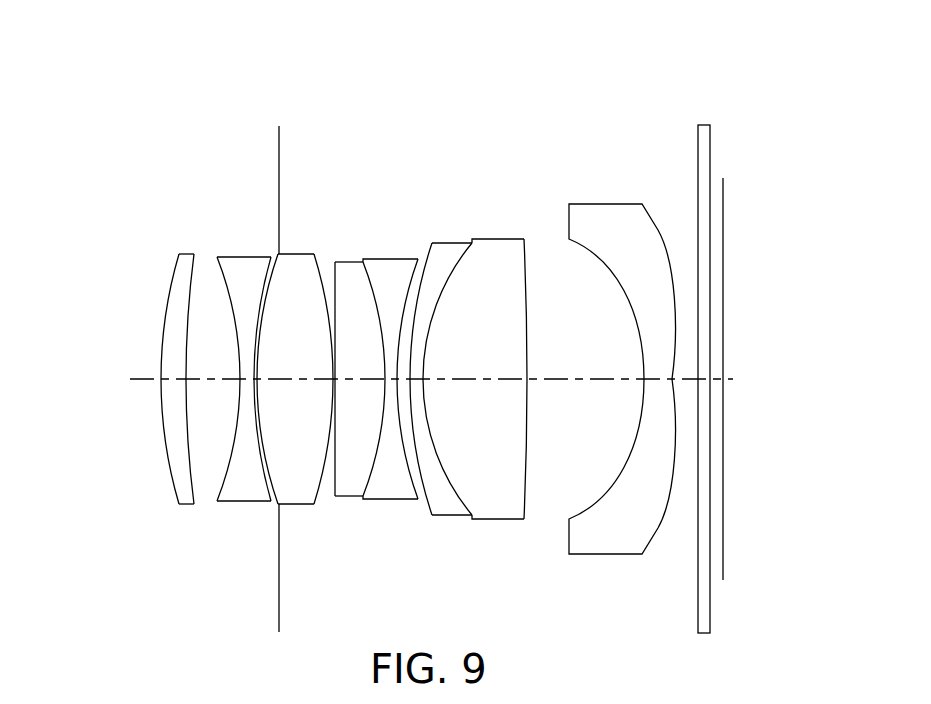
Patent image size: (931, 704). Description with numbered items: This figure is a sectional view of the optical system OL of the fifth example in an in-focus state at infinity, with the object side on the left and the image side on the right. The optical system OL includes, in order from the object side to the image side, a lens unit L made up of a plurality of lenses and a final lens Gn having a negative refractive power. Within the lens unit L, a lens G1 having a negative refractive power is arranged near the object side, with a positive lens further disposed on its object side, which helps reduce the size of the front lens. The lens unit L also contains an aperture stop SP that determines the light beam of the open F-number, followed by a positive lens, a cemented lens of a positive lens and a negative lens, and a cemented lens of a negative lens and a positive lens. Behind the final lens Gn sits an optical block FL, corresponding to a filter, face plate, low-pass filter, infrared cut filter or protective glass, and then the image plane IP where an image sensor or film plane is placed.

The optical system OL is at (667, 87).
The lens unit L is at (547, 157).
The final lens Gn is at (667, 157).
The lens G1 is at (233, 497).
The aperture stop SP is at (279, 575).
The optical block FL is at (705, 171).
The image plane IP is at (721, 232).